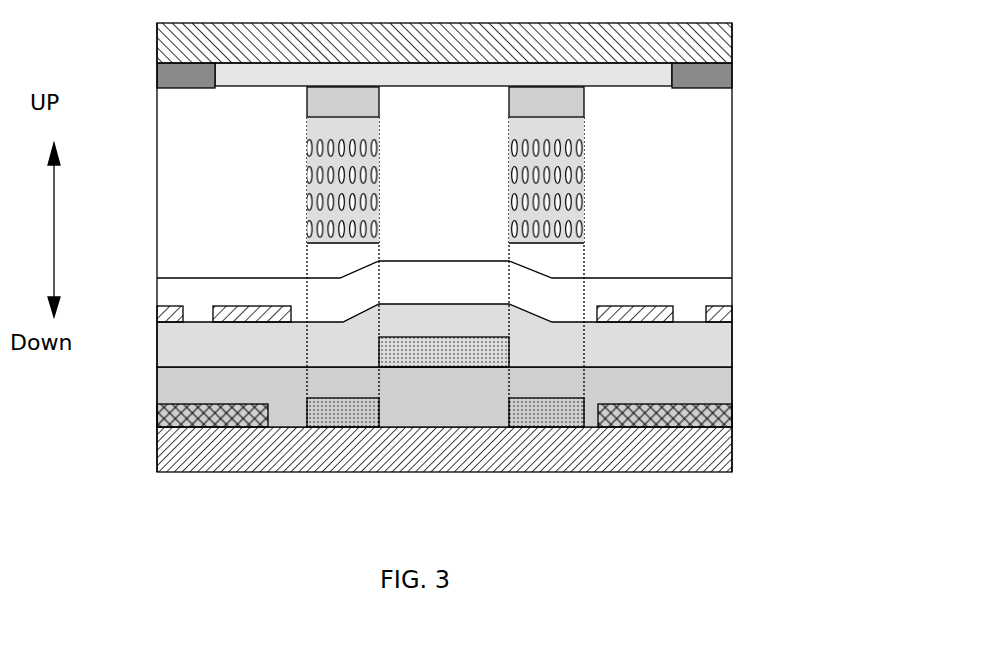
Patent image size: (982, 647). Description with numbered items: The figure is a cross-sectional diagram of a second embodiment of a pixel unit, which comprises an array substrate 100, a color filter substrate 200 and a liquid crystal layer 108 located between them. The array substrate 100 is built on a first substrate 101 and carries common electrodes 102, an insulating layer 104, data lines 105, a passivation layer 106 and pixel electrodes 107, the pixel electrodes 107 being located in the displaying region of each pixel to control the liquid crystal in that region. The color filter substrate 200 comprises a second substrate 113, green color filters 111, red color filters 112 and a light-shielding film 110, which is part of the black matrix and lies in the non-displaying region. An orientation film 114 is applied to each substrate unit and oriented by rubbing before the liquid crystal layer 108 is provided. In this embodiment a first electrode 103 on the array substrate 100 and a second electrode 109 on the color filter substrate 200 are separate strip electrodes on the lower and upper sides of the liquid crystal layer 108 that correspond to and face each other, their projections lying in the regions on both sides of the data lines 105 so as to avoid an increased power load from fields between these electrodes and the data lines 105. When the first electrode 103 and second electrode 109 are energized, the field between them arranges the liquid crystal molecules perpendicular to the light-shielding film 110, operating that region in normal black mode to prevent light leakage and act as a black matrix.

The array substrate 100 is at (800, 263).
The first substrate 101 is at (730, 460).
The common electrodes 102 is at (170, 420).
The first electrode 103 is at (362, 412).
The insulating layer 104 is at (730, 378).
The data lines 105 is at (442, 348).
The passivation layer 106 is at (730, 338).
The pixel electrodes 107 is at (165, 320).
The liquid crystal layer 108 is at (582, 150).
The second electrode 109 is at (360, 98).
The light-shielding film 110 is at (228, 75).
The green color filters 111 is at (173, 77).
The red color filters 112 is at (724, 78).
The second substrate 113 is at (173, 40).
The orientation film 114 is at (722, 287).
The color filter substrate 200 is at (802, 20).